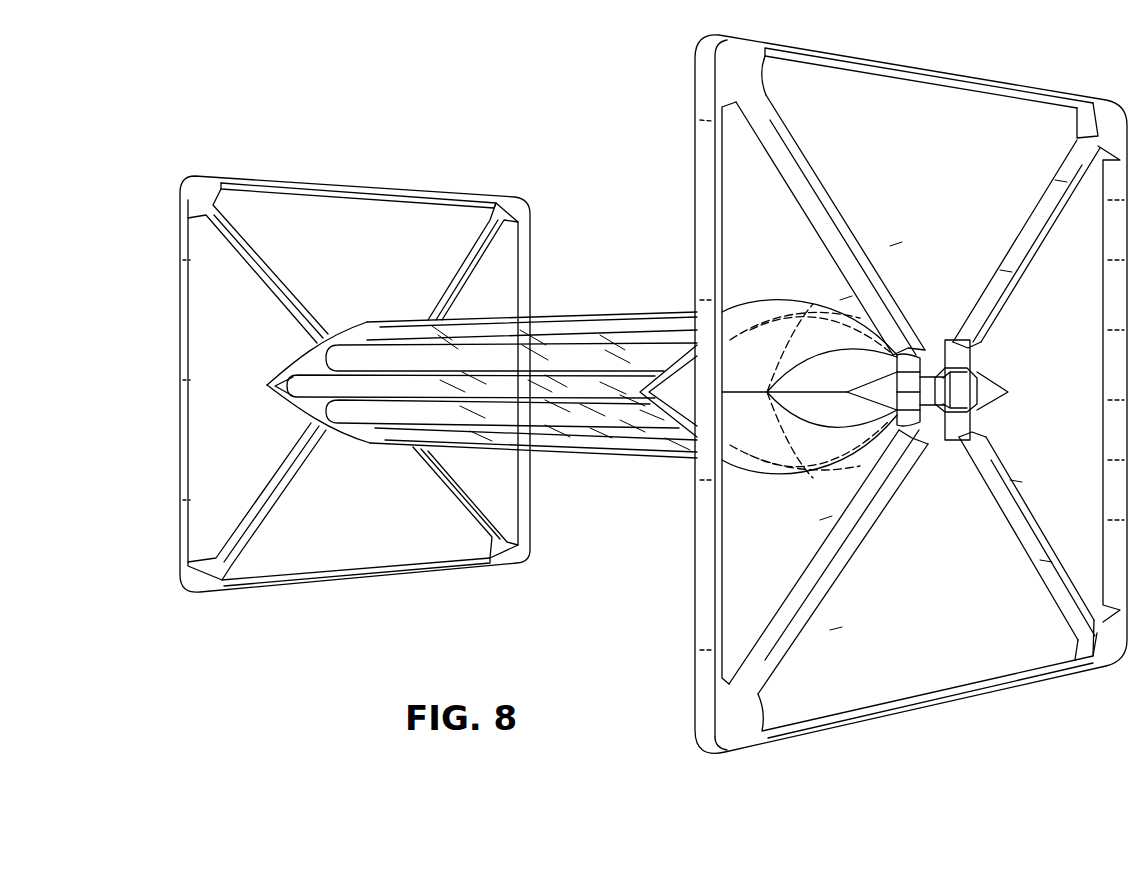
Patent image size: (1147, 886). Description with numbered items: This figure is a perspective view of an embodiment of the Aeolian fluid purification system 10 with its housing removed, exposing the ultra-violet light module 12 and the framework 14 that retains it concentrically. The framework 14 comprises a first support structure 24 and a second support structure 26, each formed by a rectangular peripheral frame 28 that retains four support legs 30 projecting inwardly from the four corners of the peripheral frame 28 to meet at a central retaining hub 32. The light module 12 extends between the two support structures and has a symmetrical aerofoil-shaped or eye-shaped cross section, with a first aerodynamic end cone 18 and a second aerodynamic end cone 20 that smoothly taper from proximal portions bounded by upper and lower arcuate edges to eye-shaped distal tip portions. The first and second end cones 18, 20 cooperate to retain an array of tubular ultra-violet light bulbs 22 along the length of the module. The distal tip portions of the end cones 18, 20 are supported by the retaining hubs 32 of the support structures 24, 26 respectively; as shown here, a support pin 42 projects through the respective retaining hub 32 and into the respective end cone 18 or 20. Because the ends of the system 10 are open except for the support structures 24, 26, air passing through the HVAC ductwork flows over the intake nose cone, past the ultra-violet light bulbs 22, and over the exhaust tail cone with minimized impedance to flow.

The Aeolian fluid purification system 10 is at (606, 240).
The ultra-violet light module 12 is at (637, 462).
The framework 14 is at (873, 726).
The first aerodynamic end cone 18 is at (791, 464).
The second aerodynamic end cone 20 is at (281, 365).
The tubular ultra-violet light bulbs 22 is at (576, 436).
The first support structure 24 is at (1021, 699).
The second support structure 26 is at (276, 591).
The rectangular peripheral frame 28 is at (901, 65).
The support legs 30 is at (1020, 243).
The central retaining hub 32 is at (980, 369).
The support pin 42 is at (965, 397).